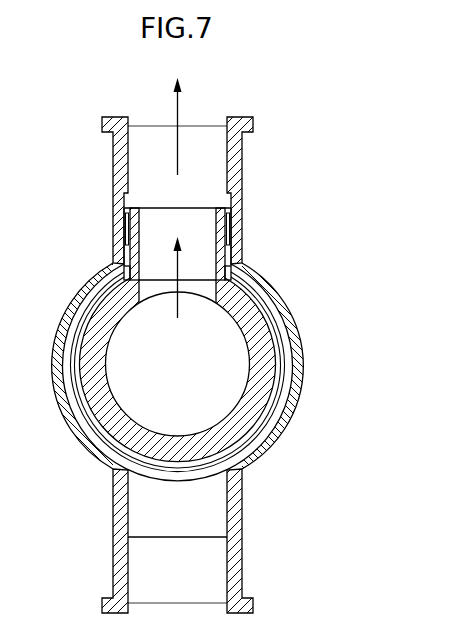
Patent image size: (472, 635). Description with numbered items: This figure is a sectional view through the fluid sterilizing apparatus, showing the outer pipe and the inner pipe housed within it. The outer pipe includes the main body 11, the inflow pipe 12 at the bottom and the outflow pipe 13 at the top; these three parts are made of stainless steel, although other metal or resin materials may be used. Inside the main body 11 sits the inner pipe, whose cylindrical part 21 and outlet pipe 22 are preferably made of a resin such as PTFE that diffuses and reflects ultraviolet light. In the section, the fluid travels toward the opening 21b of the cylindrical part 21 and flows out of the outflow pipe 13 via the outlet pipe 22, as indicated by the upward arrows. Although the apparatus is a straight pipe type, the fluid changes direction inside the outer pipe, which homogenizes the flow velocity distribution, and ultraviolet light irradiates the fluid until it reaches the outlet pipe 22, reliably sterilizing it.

The main body 11 is at (74, 439).
The inflow pipe 12 is at (242, 558).
The outflow pipe 13 is at (242, 156).
The cylindrical part 21 is at (268, 333).
The opening 21b is at (222, 262).
The outlet pipe 22 is at (118, 229).